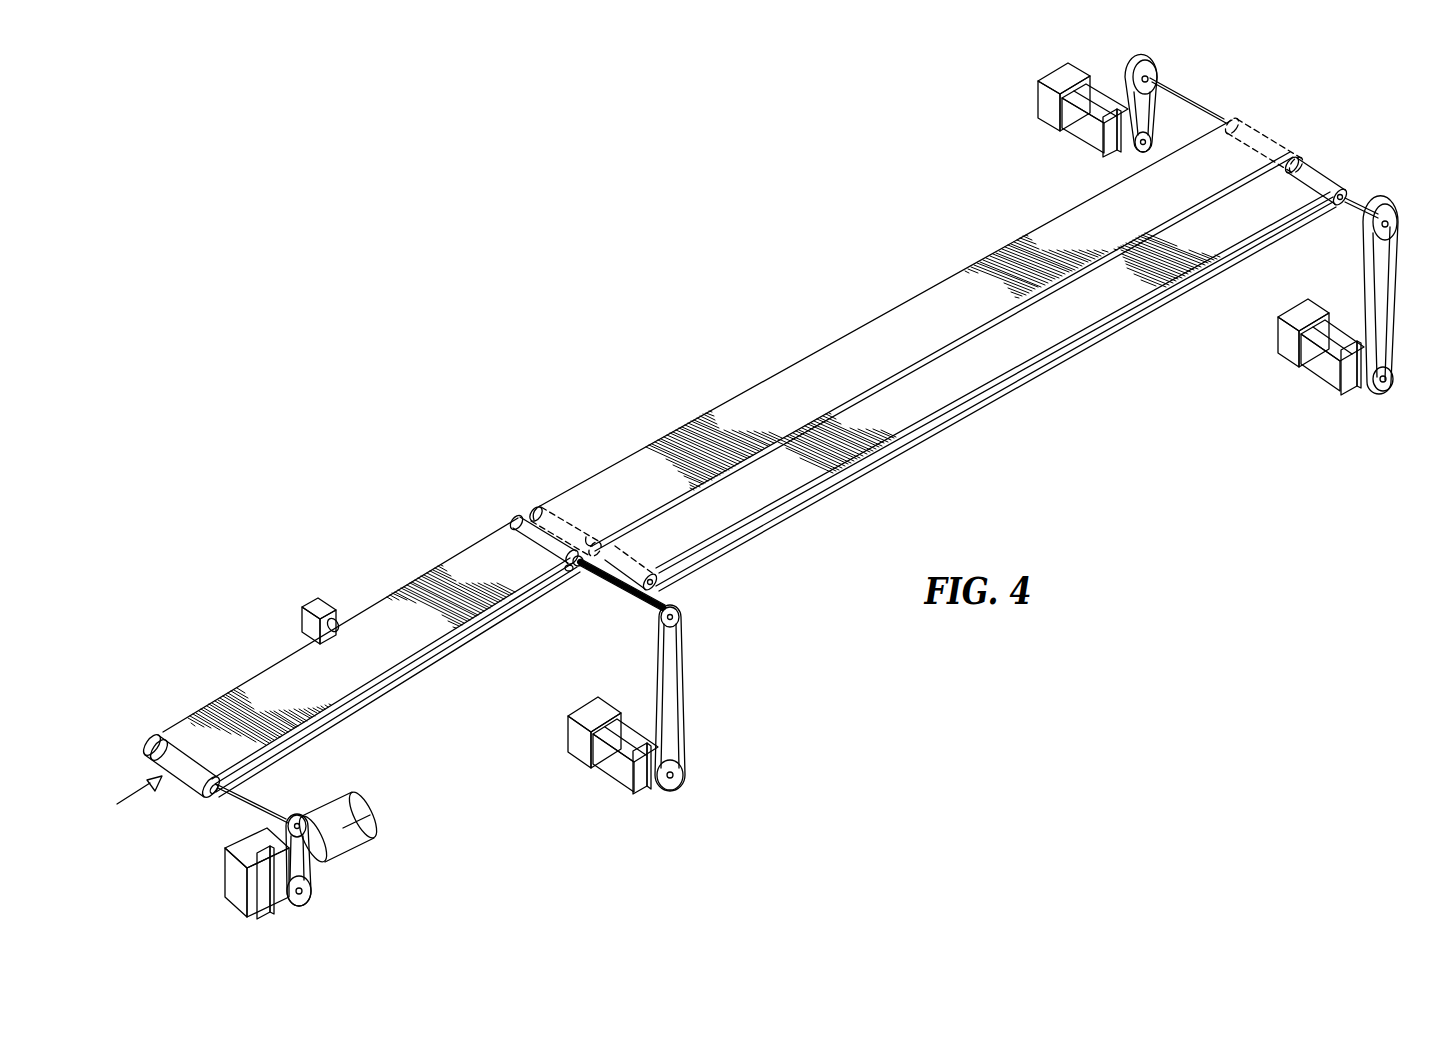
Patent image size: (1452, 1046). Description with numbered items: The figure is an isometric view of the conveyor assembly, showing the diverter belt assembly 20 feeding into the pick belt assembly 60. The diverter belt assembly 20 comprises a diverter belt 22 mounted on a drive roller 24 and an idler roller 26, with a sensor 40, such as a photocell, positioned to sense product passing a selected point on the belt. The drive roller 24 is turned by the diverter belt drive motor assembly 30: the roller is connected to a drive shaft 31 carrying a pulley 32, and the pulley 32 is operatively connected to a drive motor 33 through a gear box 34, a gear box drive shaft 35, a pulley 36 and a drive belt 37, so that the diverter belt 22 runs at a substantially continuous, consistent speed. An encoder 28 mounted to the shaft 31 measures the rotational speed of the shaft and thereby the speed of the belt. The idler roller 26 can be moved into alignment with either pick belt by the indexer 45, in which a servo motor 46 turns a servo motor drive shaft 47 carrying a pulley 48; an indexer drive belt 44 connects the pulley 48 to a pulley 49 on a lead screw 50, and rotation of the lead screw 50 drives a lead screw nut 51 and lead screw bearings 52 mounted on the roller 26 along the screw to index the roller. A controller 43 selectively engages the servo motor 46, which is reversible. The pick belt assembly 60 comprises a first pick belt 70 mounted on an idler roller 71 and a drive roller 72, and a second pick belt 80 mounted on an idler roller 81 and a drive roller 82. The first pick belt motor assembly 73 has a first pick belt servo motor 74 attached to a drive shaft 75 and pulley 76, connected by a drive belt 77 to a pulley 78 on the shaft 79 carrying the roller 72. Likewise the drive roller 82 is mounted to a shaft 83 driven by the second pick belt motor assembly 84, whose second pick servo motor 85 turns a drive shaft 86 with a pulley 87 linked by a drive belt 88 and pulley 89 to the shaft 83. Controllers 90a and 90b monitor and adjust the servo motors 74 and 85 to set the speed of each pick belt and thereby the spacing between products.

The diverter belt assembly 20 is at (366, 521).
The diverter belt 22 is at (281, 676).
The drive roller 24 is at (212, 795).
The idler roller 26 is at (508, 518).
The encoder 28 is at (160, 738).
The diverter belt drive motor assembly 30 is at (402, 855).
The drive shaft 31 is at (245, 800).
The pulley 32 is at (300, 815).
The drive motor 33 is at (356, 805).
The gear box 34 is at (228, 873).
The gear box drive shaft 35 is at (242, 910).
The pulley 36 is at (306, 894).
The drive belt 37 is at (319, 851).
The sensor 40 is at (313, 603).
The controller 43 is at (568, 740).
The indexer drive belt 44 is at (686, 690).
The indexer 45 is at (730, 746).
The servo motor 46 is at (605, 765).
The servo motor drive shaft 47 is at (640, 782).
The pulley 48 is at (681, 780).
The pulley 49 is at (682, 617).
The lead screw 50 is at (625, 602).
The lead screw nut 51 is at (566, 574).
The lead screw bearings 52 is at (580, 570).
The pick belt assembly 60 is at (828, 266).
The first pick belt 70 is at (762, 392).
The idler roller 71 is at (556, 505).
The drive roller 72 is at (1240, 150).
The first pick belt motor assembly 73 is at (996, 135).
The first pick belt servo motor 74 is at (1092, 100).
The drive shaft 75 is at (1104, 136).
The pulley 76 is at (1146, 154).
The drive belt 77 is at (1160, 125).
The pulley 78 is at (1156, 76).
The shaft 79 is at (1212, 116).
The second pick belt 80 is at (915, 373).
The idler roller 81 is at (666, 580).
The drive roller 82 is at (1337, 208).
The shaft 83 is at (1360, 200).
The second pick belt motor assembly 84 is at (1224, 374).
The second pick servo motor 85 is at (1330, 362).
The drive shaft 86 is at (1362, 383).
The pulley 87 is at (1391, 383).
The drive belt 88 is at (1398, 284).
The pulley 89 is at (1400, 210).
The controller 90a is at (1038, 98).
The controller 90b is at (1278, 341).